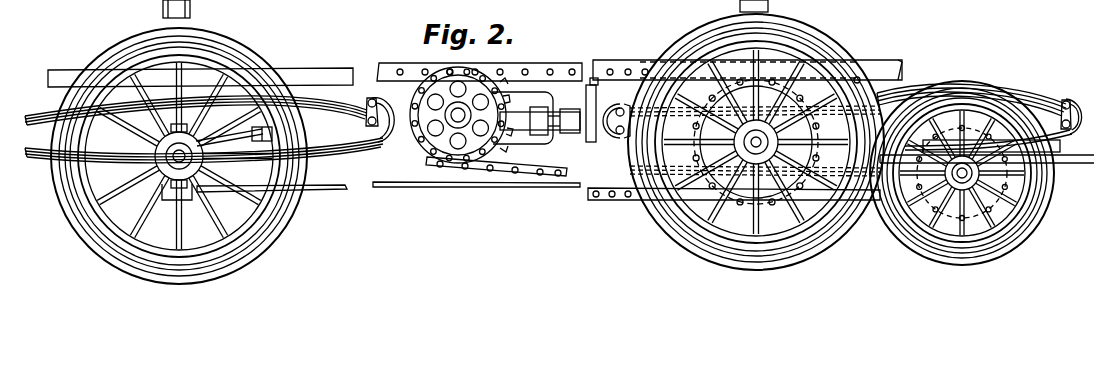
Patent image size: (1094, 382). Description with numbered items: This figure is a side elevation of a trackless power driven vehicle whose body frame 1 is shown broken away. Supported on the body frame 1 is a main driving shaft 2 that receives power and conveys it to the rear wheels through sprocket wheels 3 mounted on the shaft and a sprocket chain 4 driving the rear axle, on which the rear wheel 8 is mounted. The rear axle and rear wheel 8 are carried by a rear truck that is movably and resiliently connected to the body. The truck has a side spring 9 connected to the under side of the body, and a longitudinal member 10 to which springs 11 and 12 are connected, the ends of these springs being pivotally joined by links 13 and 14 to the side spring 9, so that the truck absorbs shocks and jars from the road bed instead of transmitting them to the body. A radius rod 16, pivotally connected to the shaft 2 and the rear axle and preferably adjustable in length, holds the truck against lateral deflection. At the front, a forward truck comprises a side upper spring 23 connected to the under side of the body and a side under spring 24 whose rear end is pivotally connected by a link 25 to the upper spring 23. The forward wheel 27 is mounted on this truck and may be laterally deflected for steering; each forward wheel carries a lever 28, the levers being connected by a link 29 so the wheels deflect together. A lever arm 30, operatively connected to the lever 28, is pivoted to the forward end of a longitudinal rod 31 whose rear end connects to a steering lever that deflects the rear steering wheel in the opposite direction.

The body frame 1 is at (339, 69).
The main driving shaft 2 is at (421, 143).
The sprocket wheels 3 is at (492, 93).
The sprocket chain 4 is at (565, 64).
The rear wheel 8 is at (815, 40).
The side spring 9 is at (897, 93).
The longitudinal member 10 is at (995, 198).
The spring 11 is at (1066, 142).
The spring 12 is at (618, 142).
The link 13 is at (1062, 100).
The link 14 is at (614, 108).
The radius rod 16 is at (572, 134).
The side upper spring 23 is at (40, 112).
The side under spring 24 is at (337, 150).
The link 25 is at (366, 116).
The forward wheel 27 is at (240, 50).
The lever 28 is at (205, 140).
The link 29 is at (270, 128).
The lever arm 30 is at (152, 175).
The longitudinal rod 31 is at (332, 192).